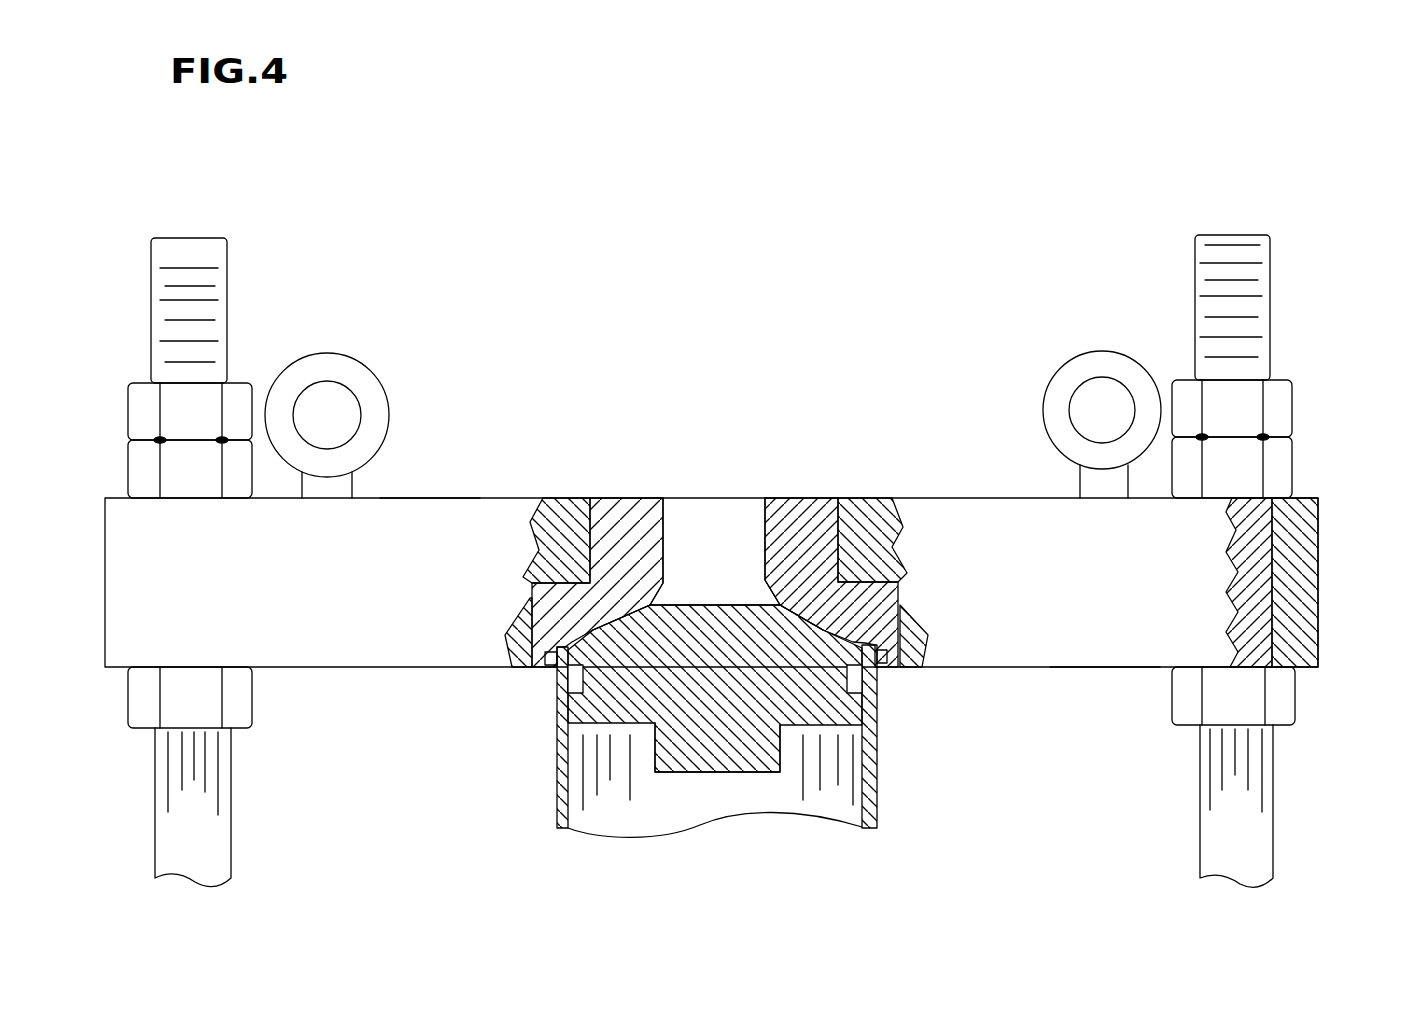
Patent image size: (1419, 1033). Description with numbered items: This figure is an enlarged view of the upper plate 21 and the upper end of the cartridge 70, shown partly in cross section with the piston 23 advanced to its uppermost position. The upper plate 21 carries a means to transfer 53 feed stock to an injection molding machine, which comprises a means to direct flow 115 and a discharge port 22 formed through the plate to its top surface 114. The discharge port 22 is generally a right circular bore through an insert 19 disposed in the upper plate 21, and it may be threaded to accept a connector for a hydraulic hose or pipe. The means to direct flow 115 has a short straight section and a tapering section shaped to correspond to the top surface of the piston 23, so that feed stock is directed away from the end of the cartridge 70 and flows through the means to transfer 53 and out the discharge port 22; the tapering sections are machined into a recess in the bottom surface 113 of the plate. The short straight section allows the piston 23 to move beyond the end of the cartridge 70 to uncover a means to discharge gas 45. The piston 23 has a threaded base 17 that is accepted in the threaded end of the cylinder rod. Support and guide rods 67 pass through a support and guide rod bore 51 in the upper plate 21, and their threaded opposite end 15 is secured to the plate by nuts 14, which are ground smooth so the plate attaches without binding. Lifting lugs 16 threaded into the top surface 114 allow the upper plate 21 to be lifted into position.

The nuts 14 is at (1292, 402).
The opposite end of support and guide rod 15 is at (1213, 236).
The lifting lugs 16 is at (1090, 362).
The threaded base 17 is at (665, 765).
The insert 19 is at (555, 630).
The upper plate 21 is at (402, 572).
The discharge port 22 is at (718, 538).
The piston 23 is at (700, 724).
The means to discharge gas 45 is at (925, 615).
The support and guide rod bore 51 is at (1277, 566).
The means to transfer 53 is at (766, 566).
The support and guide rods 67 is at (1273, 813).
The cartridge 70 is at (877, 775).
The bottom surface 113 is at (1103, 668).
The top surface 114 is at (432, 498).
The means to direct flow 115 is at (762, 652).